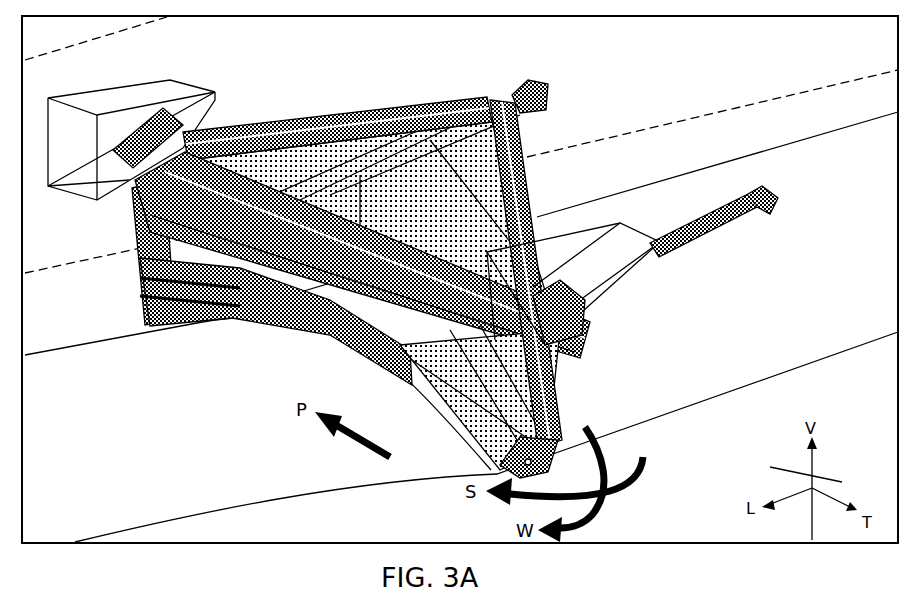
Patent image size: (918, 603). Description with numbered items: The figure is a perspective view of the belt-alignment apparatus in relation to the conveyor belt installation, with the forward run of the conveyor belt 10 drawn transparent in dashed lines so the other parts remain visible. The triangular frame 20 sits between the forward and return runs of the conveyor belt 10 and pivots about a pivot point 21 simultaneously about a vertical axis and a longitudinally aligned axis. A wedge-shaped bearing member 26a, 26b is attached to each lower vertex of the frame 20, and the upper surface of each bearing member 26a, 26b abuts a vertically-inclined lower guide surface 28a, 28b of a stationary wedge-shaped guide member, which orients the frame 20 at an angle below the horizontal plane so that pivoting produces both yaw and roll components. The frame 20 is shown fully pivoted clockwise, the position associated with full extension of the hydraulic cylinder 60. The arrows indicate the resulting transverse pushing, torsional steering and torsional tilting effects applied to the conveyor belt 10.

The conveyor belt 10 is at (308, 494).
The frame 20 is at (329, 112).
The pivot point 21 is at (511, 100).
The bearing member 26a is at (84, 186).
The bearing member 26b is at (588, 332).
The guide surface 28a is at (144, 123).
The guide surface 28b is at (662, 322).
The hydraulic cylinder 60 is at (736, 224).